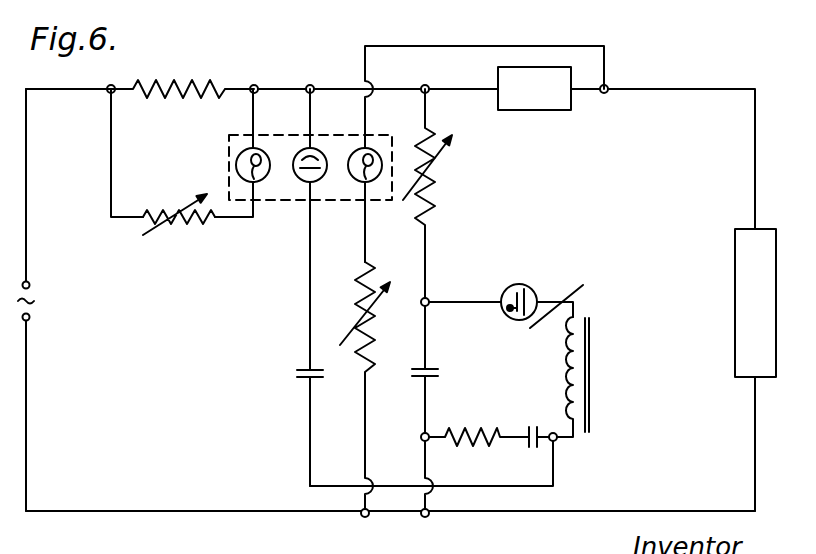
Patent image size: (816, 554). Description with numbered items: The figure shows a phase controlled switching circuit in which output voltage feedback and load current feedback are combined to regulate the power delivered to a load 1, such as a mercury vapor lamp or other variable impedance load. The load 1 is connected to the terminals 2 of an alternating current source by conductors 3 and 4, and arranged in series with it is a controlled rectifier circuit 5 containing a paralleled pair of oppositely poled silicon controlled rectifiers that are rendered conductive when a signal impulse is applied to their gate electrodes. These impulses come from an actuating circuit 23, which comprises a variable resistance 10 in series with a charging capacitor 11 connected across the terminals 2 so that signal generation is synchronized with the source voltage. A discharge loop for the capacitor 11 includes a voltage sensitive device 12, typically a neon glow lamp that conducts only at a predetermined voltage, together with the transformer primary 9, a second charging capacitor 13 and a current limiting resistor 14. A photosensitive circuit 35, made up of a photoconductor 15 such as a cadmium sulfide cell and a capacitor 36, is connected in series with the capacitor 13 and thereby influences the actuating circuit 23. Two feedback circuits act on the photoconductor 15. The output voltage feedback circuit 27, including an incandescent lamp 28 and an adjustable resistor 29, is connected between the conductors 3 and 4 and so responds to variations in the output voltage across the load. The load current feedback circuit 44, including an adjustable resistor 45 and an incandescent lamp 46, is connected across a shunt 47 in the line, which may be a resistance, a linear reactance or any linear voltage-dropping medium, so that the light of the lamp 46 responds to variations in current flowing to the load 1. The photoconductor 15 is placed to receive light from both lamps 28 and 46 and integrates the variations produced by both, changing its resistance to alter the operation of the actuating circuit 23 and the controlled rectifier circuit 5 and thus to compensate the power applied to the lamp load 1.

The load 1 is at (792, 295).
The terminals 2 is at (43, 322).
The conductor 3 is at (73, 93).
The conductor 4 is at (132, 513).
The controlled rectifier circuit 5 is at (542, 103).
The transformer primary 9 is at (608, 370).
The variable resistance 10 is at (437, 197).
The charging capacitor 11 is at (432, 362).
The voltage sensitive device 12 is at (522, 284).
The second charging capacitor 13 is at (533, 425).
The current limiting resistor 14 is at (470, 427).
The photoconductor 15 is at (302, 188).
The actuating circuit 23 is at (595, 288).
The feedback circuit 27 is at (446, 47).
The incandescent lamp 28 is at (358, 188).
The adjustable resistor 29 is at (370, 342).
The photosensitive circuit 35 is at (308, 486).
The capacitor 36 is at (297, 378).
The load current feedback circuit 44 is at (108, 174).
The adjustable resistor 45 is at (184, 228).
The incandescent lamp 46 is at (236, 165).
The shunt 47 is at (158, 98).